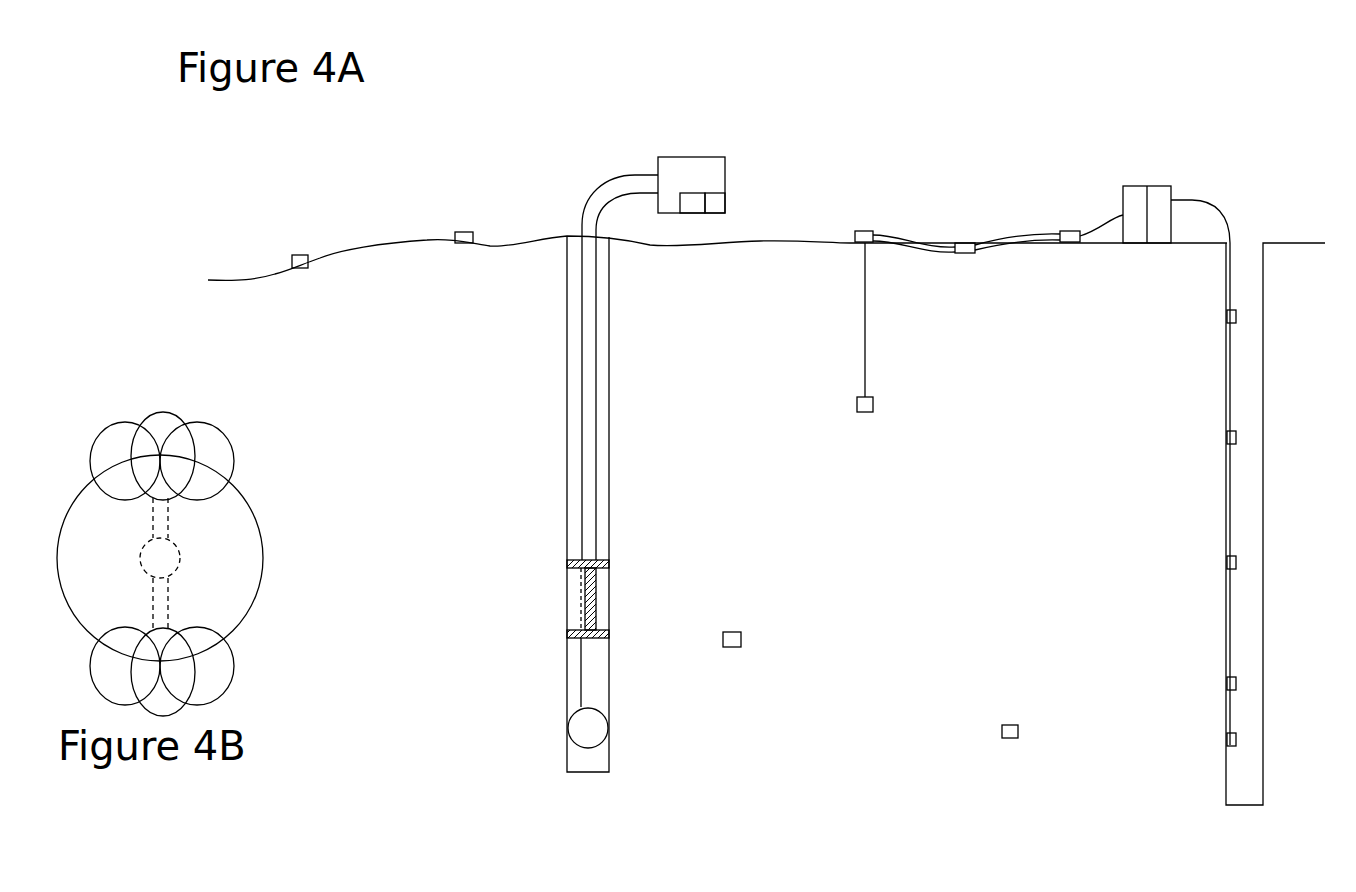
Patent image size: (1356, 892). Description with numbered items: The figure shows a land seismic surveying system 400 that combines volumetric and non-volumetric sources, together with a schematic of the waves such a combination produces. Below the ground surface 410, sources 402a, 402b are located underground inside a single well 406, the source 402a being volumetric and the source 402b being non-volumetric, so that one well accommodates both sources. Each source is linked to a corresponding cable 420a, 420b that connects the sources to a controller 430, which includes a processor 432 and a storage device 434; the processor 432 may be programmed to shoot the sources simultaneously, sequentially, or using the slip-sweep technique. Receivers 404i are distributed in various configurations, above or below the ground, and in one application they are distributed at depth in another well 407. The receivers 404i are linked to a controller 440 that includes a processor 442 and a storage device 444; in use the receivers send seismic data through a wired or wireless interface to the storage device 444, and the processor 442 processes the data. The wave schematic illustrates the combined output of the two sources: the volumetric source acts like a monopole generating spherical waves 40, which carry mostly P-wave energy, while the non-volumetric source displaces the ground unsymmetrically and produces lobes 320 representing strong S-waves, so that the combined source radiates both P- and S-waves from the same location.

In FIG. 4A, the land seismic surveying system 400 is at (668, 49).
In FIG. 4A, the ground surface 410 is at (375, 240).
In FIG. 4A, the receivers 404i is at (465, 232).
In FIG. 4A, the well 406 is at (609, 440).
In FIG. 4A, the cable 420a is at (581, 356).
In FIG. 4A, the cable 420b is at (596, 314).
In FIG. 4A, the controller 430 is at (700, 157).
In FIG. 4A, the processor 432 is at (712, 205).
In FIG. 4A, the storage device 434 is at (693, 207).
In FIG. 4A, the source 402a is at (608, 721).
In FIG. 4B, the source 402a is at (182, 560).
In FIG. 4A, the source 402b is at (598, 558).
In FIG. 4B, the source 402b is at (170, 522).
In FIG. 4A, the controller 440 is at (1145, 186).
In FIG. 4A, the processor 442 is at (1135, 225).
In FIG. 4A, the storage device 444 is at (1156, 225).
In FIG. 4A, the well 407 is at (1263, 485).
In FIG. 4B, the spherical waves 40 is at (238, 628).
In FIG. 4B, the lobes 320 is at (212, 423).